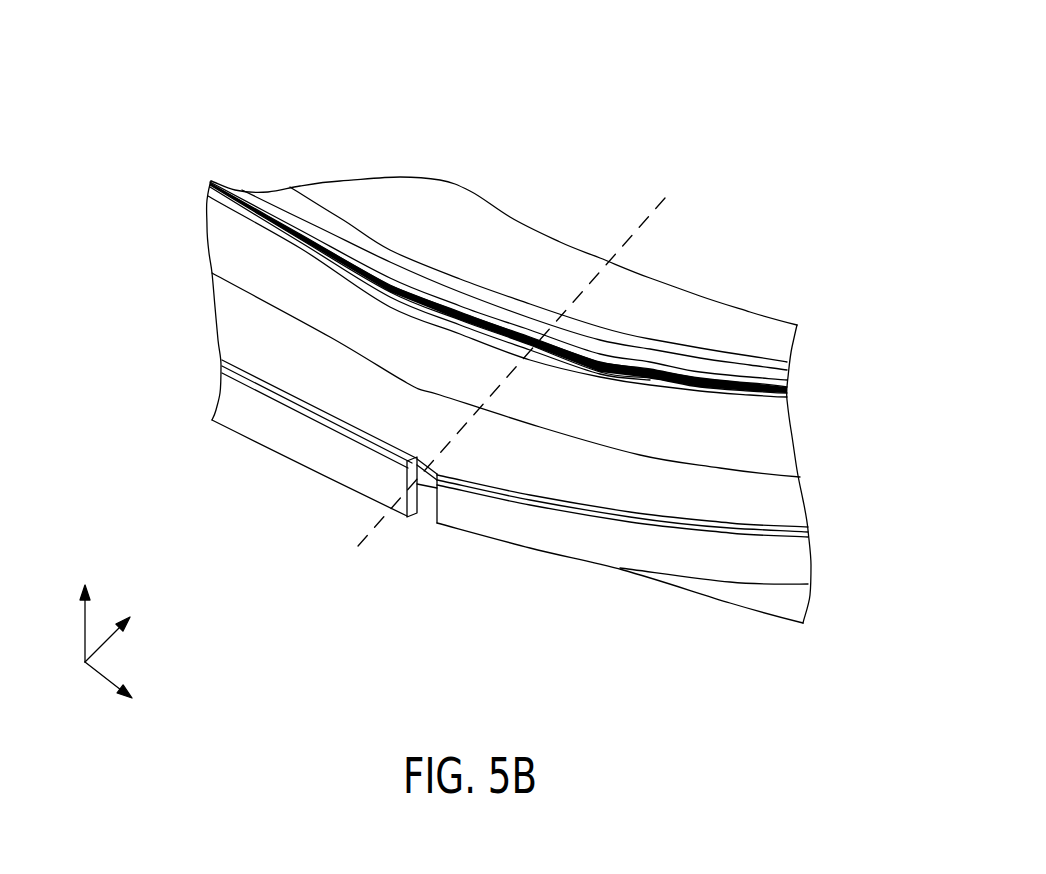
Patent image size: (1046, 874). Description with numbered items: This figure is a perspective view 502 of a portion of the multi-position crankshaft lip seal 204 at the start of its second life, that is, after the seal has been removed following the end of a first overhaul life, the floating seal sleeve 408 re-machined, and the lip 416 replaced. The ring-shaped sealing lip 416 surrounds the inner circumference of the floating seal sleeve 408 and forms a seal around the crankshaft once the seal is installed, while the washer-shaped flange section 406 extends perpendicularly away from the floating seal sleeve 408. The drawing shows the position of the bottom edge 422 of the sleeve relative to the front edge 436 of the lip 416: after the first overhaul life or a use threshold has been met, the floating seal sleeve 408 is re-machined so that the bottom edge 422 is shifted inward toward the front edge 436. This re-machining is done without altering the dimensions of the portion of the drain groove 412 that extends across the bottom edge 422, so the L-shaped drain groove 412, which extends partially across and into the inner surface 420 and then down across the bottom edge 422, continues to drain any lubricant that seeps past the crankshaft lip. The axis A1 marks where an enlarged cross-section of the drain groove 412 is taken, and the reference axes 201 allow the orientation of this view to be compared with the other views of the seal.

The perspective view 502 is at (766, 144).
The multi-position crankshaft lip seal 204 is at (790, 500).
The inner surface 420 is at (540, 278).
The sealing lip 416 is at (713, 444).
The floating seal sleeve 408 is at (232, 375).
The front edge 436 is at (350, 422).
The bottom edge 422 is at (309, 462).
The drain groove 412 is at (419, 538).
The flange section 406 is at (778, 598).
The reference axes 201 is at (126, 566).
The axis A1 is at (643, 231).